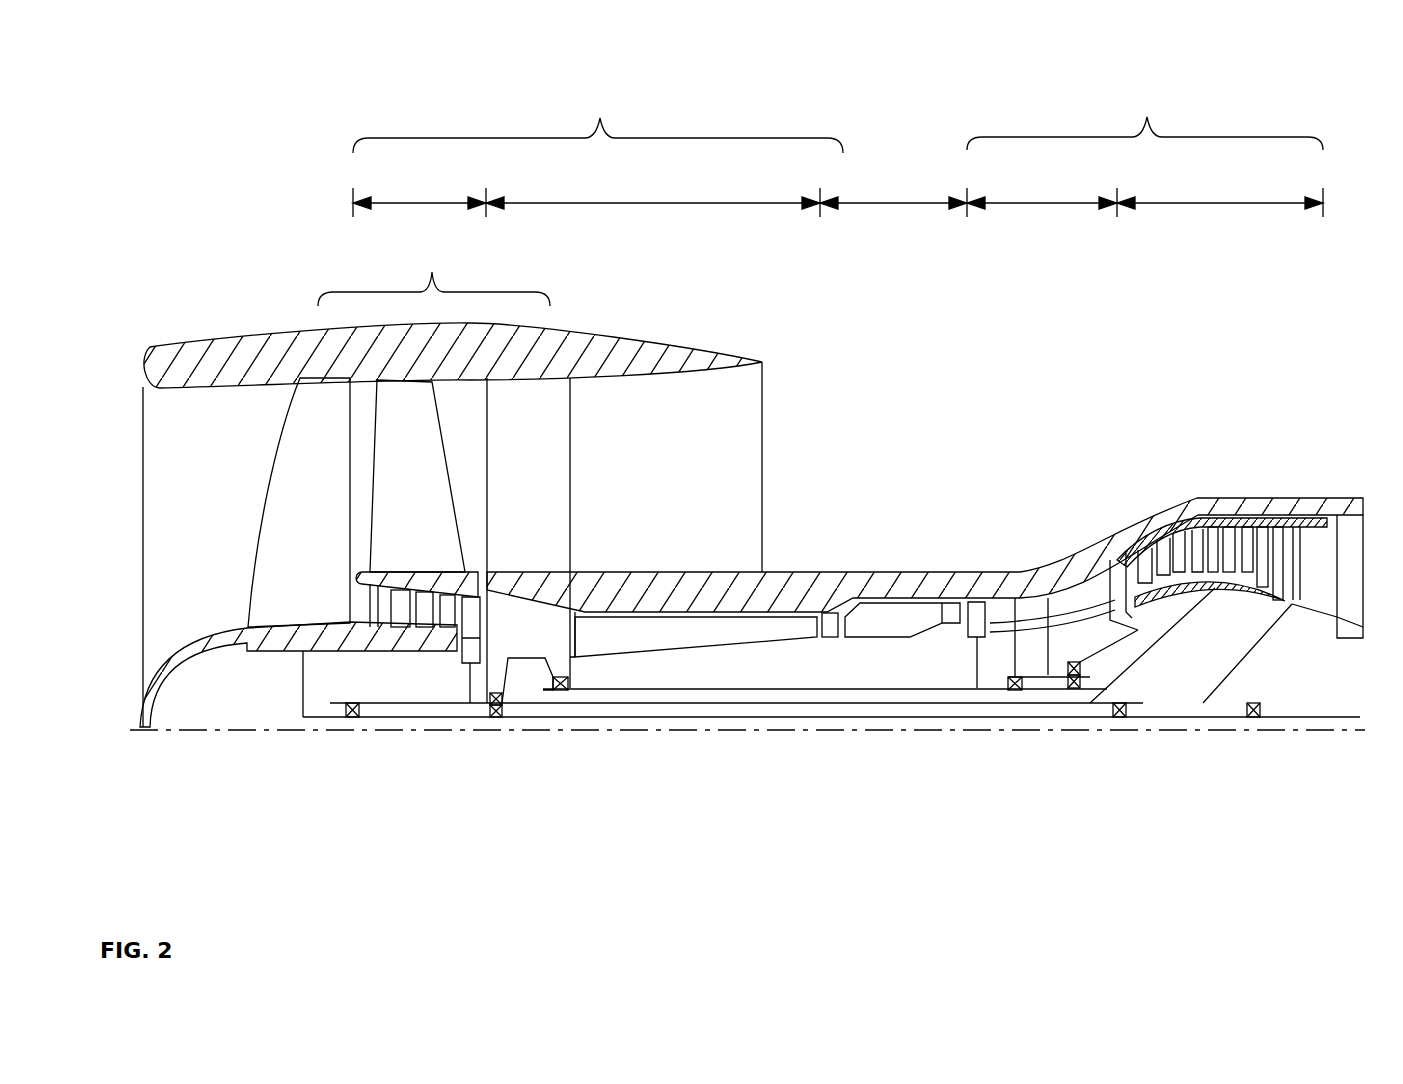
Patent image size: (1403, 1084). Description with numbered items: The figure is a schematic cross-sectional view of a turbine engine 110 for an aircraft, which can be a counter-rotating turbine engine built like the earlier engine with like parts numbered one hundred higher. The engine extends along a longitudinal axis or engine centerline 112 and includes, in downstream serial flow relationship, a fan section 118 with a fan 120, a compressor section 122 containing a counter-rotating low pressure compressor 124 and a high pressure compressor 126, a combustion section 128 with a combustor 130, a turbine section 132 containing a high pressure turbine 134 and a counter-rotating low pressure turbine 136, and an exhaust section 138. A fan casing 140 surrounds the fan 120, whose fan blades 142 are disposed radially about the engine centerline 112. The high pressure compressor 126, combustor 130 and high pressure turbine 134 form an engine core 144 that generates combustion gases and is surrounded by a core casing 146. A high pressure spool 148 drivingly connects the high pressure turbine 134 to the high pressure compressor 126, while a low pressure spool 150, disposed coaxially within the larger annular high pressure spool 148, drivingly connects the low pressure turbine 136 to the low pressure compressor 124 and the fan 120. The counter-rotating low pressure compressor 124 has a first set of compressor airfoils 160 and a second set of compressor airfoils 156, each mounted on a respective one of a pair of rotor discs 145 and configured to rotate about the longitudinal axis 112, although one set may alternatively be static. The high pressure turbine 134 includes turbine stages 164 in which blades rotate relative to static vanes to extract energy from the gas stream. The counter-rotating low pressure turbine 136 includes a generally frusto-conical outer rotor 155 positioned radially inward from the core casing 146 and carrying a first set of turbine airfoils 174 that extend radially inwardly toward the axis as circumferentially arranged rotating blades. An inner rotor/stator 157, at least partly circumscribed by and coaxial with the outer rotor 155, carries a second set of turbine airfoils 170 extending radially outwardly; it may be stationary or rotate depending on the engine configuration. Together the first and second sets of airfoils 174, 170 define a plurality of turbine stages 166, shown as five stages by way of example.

The turbine engine 110 is at (266, 70).
The longitudinal axis 112 is at (180, 730).
The fan section 118 is at (432, 272).
The fan 120 is at (200, 527).
The compressor section 122 is at (600, 118).
The counter-rotating LP compressor 124 is at (405, 203).
The HP compressor 126 is at (636, 203).
The combustion section 128 is at (877, 203).
The combustor 130 is at (905, 570).
The turbine section 132 is at (1147, 117).
The HP turbine 134 is at (1030, 203).
The counter rotating LP turbine 136 is at (1192, 203).
The exhaust section 138 is at (1378, 500).
The fan casing 140 is at (652, 340).
The fan blades 142 is at (426, 482).
The engine core 144 is at (802, 655).
The rotor discs 145 is at (279, 623).
The core casing 146 is at (1107, 543).
The HP spool 148 is at (527, 697).
The LP spool 150 is at (372, 718).
The outer rotor 155 is at (1200, 518).
The second set of compressor airfoils 156 is at (447, 620).
The inner rotor/stator 157 is at (1280, 603).
The first set of compressor airfoils 160 is at (428, 598).
The turbine stages 164 is at (1125, 506).
The turbine stages 166 is at (1205, 682).
The second set of turbine airfoils 170 is at (1224, 584).
The first set of turbine airfoils 174 is at (1248, 540).